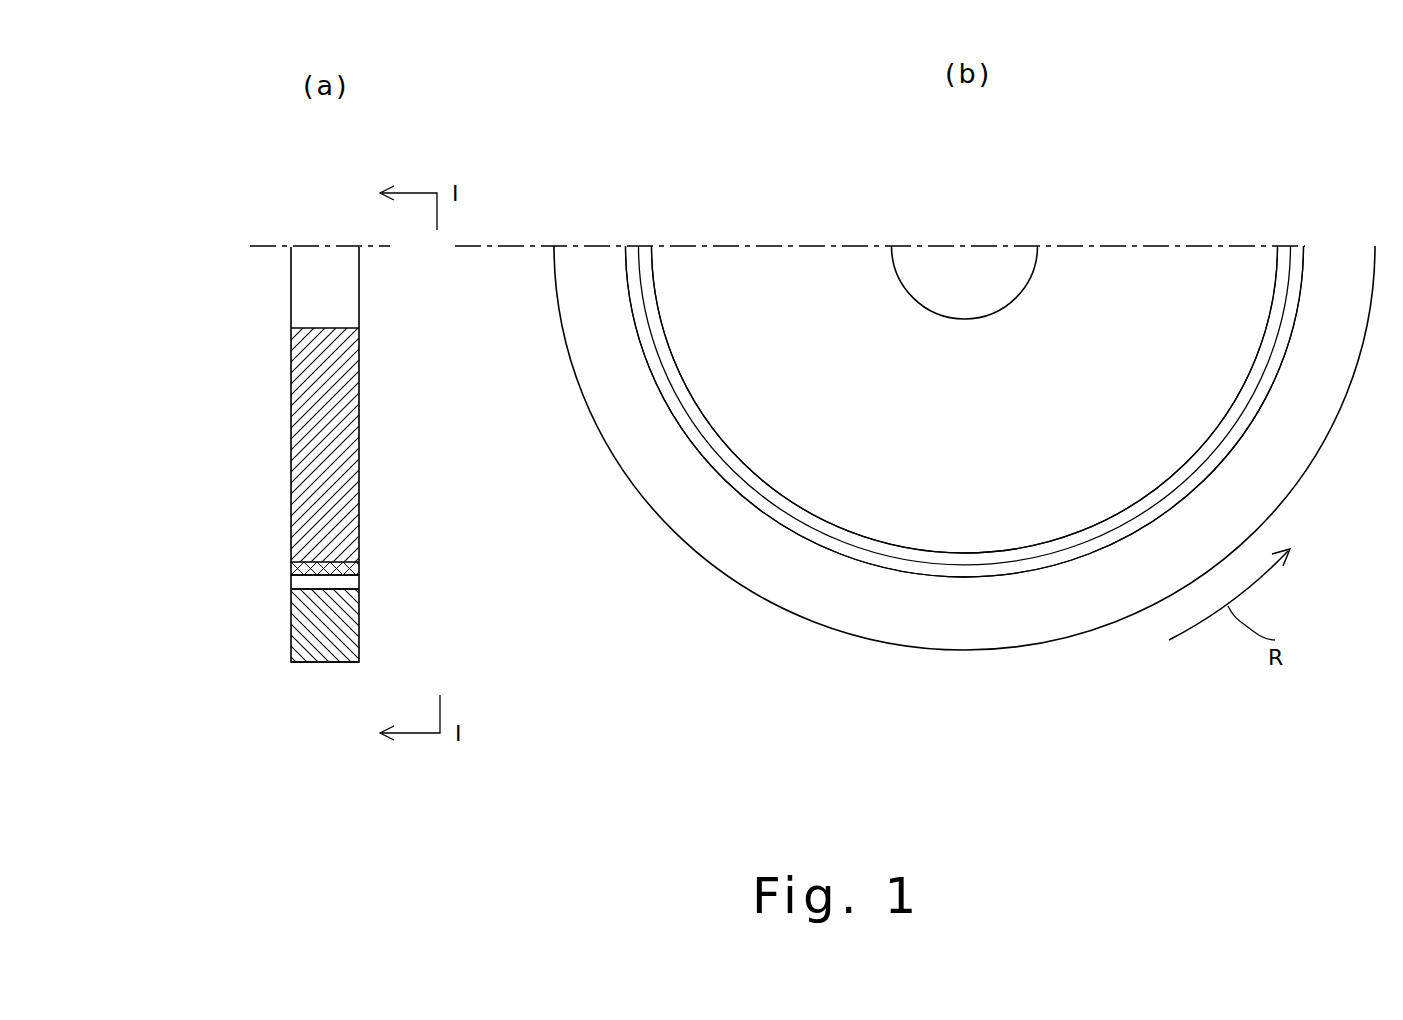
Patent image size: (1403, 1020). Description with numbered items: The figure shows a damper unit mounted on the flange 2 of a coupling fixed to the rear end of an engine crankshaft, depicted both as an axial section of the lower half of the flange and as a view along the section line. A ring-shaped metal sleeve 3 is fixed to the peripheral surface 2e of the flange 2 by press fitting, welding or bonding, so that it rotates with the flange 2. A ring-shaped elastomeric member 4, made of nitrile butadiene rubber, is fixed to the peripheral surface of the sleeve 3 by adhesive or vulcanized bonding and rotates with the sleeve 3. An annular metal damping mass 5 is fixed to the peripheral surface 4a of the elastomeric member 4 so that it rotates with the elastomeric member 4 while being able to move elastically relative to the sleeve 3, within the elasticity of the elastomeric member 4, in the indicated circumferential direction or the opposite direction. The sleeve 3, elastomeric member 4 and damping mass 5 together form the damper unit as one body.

The flange 2 is at (313, 447).
The peripheral surface of the flange 2e is at (345, 608).
The metal sleeve 3 is at (293, 570).
The elastomeric member 4 is at (357, 582).
The peripheral surface of the elastomeric member 4a is at (1005, 580).
The damping mass 5 is at (305, 663).